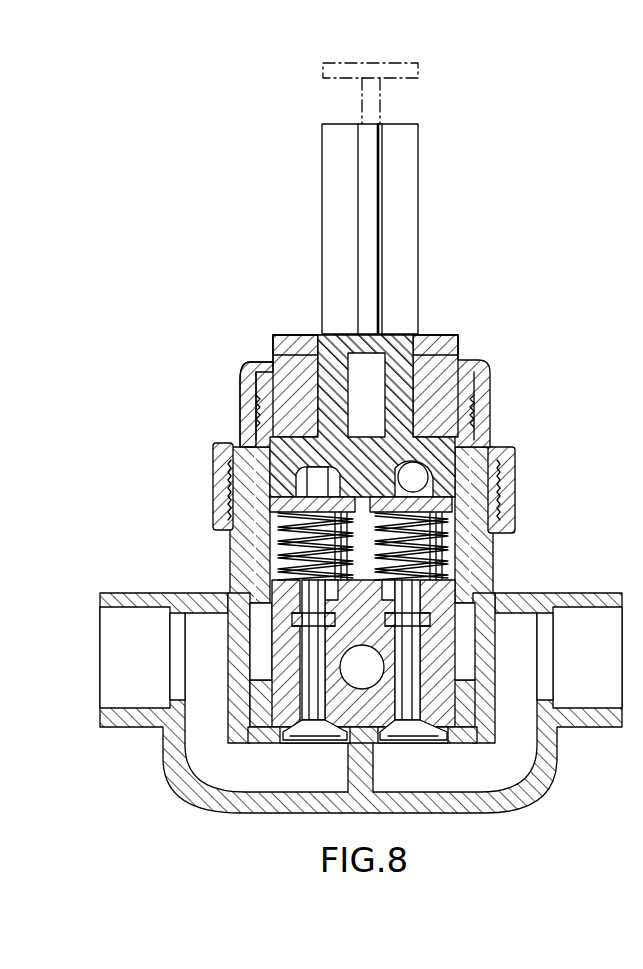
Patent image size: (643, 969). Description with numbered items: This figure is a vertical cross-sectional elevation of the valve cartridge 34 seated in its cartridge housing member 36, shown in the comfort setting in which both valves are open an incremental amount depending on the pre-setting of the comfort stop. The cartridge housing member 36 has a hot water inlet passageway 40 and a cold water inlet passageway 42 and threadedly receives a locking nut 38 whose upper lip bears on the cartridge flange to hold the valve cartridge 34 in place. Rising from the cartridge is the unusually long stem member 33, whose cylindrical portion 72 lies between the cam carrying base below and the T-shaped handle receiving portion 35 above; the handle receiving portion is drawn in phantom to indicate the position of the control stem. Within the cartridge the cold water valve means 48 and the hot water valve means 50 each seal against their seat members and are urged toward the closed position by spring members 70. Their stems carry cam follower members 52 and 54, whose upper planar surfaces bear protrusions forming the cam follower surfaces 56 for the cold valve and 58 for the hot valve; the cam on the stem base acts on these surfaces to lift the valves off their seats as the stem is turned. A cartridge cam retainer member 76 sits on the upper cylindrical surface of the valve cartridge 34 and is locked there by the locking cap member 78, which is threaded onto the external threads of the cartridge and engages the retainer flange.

The stem member 33 is at (312, 243).
The valve cartridge 34 is at (508, 377).
The T-shaped handle receiving portion 35 is at (405, 213).
The cartridge housing member 36 is at (240, 822).
The locking nut 38 is at (512, 448).
The hot water inlet passageway 40 is at (596, 712).
The cold water inlet passageway 42 is at (125, 712).
The cold water valve means 48 is at (415, 735).
The hot water valve means 50 is at (298, 735).
The cam follower member 52 is at (477, 503).
The cam follower member 54 is at (277, 510).
The cam follower surfaces 56 is at (408, 470).
The cam follower surface 58 is at (330, 474).
The spring members 70 is at (273, 540).
The cylindrical portion 72 is at (416, 334).
The cartridge cam retainer member 76 is at (307, 332).
The locking cap member 78 is at (256, 372).